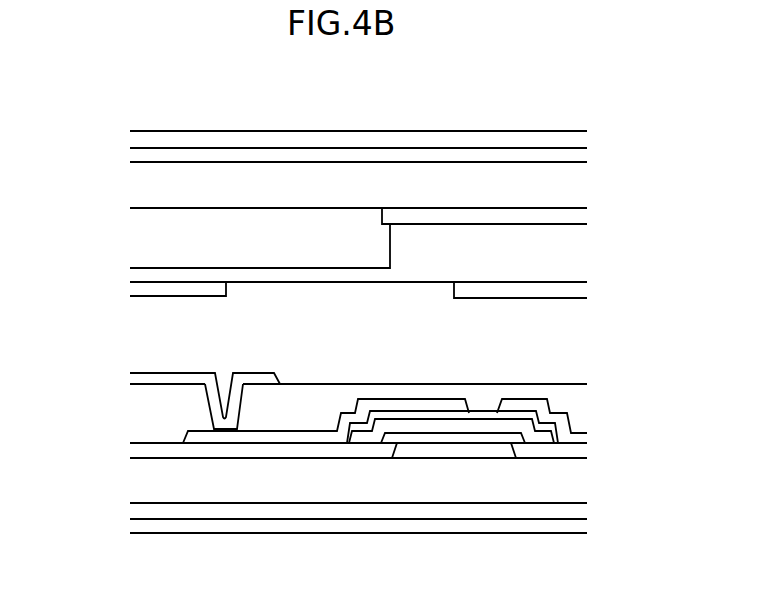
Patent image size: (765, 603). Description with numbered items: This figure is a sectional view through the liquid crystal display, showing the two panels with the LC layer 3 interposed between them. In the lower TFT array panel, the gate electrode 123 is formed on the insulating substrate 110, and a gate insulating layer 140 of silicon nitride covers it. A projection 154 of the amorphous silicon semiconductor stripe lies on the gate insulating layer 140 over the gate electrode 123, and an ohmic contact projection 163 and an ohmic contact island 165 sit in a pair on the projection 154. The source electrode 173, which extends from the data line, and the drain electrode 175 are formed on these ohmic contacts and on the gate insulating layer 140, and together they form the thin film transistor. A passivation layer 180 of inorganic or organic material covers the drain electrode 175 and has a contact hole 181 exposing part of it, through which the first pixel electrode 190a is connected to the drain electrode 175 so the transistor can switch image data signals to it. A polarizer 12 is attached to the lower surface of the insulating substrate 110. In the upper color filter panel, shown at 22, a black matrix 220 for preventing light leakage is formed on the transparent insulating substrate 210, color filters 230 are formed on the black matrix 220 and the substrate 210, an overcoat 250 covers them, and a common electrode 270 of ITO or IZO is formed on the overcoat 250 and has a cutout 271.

The LC layer 3 is at (148, 350).
The polarizer 12 is at (350, 523).
The upper panel 22 is at (368, 142).
The insulating substrate 110 is at (393, 485).
The gate electrode 123 is at (462, 453).
The gate insulating layer 140 is at (208, 452).
The projection of semiconductor stripe 154 is at (510, 427).
The projection of ohmic contact stripe 163 is at (530, 415).
The ohmic contact island 165 is at (417, 415).
The source electrode 173 is at (543, 408).
The drain electrode 175 is at (307, 437).
The passivation layer 180 is at (257, 417).
The contact hole 181 is at (225, 385).
The first pixel electrode 190a is at (147, 380).
The insulating substrate 210 is at (200, 177).
The black matrix 220 is at (422, 218).
The color filters 230 is at (300, 232).
The overcoat 250 is at (550, 248).
The common electrode 270 is at (483, 293).
The cutout 271 is at (356, 304).